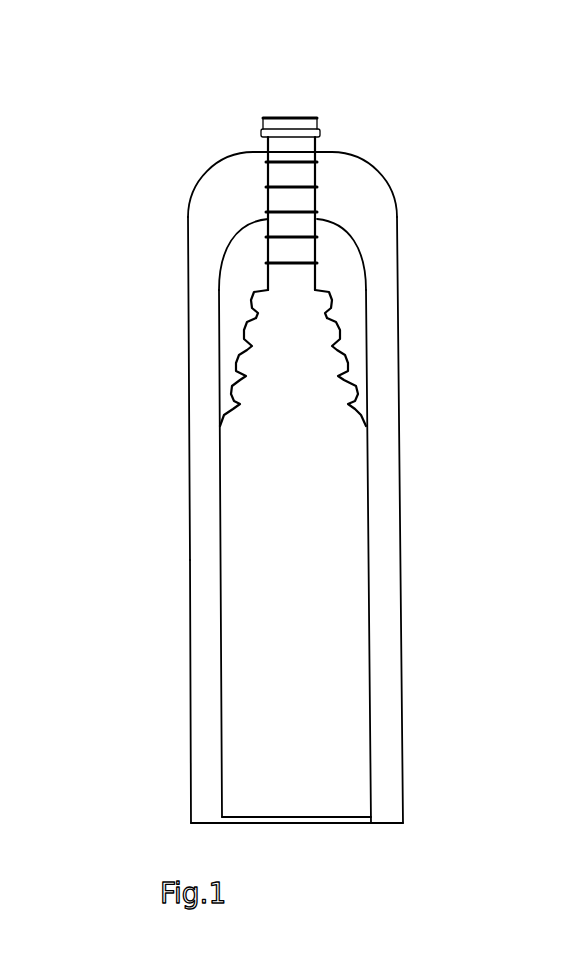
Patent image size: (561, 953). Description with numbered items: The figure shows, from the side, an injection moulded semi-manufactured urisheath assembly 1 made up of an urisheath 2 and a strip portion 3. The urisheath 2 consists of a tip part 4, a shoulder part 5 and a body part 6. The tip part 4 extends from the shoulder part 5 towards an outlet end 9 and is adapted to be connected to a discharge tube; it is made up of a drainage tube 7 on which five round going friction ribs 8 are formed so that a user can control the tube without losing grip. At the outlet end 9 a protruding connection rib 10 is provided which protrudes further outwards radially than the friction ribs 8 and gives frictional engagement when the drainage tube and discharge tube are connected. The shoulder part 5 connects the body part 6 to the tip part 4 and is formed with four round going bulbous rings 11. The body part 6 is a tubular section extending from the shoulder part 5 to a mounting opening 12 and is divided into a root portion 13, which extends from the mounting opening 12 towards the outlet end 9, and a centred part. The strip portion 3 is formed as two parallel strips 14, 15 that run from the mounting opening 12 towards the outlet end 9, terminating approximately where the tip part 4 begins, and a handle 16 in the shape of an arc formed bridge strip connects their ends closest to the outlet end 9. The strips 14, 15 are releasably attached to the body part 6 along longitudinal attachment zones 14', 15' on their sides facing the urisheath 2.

The urisheath assembly 1 is at (170, 110).
The urisheath 2 is at (223, 414).
The strip portion 3 is at (195, 495).
The tip part 4 is at (317, 173).
The shoulder part 5 is at (343, 347).
The body part 6 is at (347, 663).
The drainage tube 7 is at (268, 152).
The friction ribs 8 is at (262, 197).
The outlet end 9 is at (284, 117).
The connection rib 10 is at (320, 133).
The bulbous rings 11 is at (330, 293).
The mounting opening 12 is at (342, 823).
The root portion 13 is at (357, 800).
The strip 14 is at (156, 691).
The longitudinal attachment zone 14' is at (142, 553).
The strip 15 is at (430, 520).
The longitudinal attachment zone 15' is at (421, 556).
The handle 16 is at (360, 200).